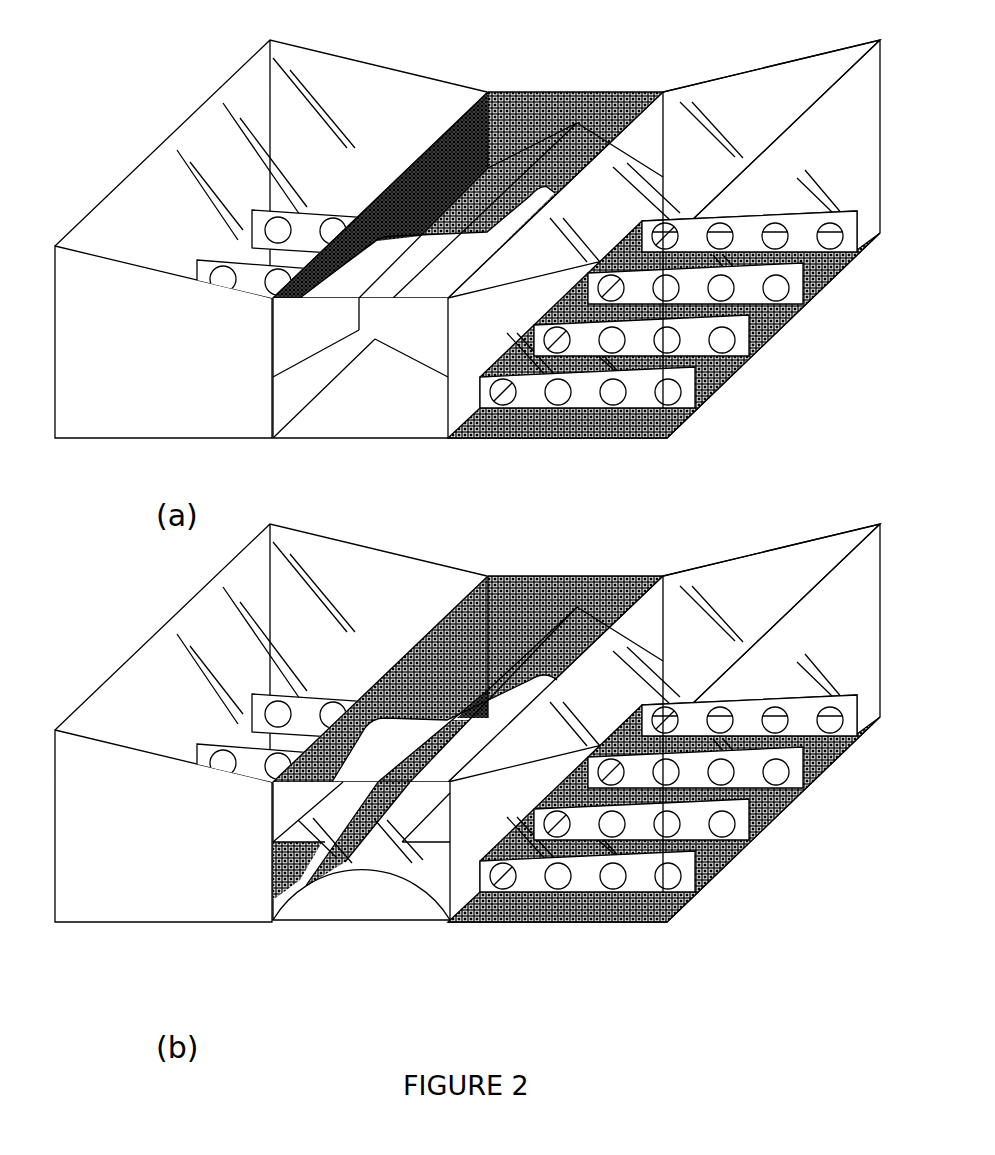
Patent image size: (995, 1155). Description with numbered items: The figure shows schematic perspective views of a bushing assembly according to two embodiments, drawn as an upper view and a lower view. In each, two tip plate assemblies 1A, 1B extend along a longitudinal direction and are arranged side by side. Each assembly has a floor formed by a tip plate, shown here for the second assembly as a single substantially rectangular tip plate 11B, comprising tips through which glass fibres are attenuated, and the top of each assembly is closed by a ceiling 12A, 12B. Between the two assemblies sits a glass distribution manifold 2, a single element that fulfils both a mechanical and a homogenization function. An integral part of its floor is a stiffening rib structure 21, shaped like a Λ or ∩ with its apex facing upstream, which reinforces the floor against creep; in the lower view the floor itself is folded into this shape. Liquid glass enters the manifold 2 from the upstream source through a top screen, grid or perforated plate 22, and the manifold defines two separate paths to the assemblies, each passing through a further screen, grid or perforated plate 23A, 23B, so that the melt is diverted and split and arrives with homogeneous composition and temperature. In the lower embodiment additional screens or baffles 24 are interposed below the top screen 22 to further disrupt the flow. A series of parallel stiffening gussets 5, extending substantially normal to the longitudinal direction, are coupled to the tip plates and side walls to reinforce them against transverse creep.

The first tip plate assembly 1A is at (411, 58).
The second tip plate assembly 1B is at (735, 59).
The ceiling of first tip plate assembly 12A is at (320, 58).
The ceiling of second tip plate assembly 12B is at (770, 62).
The tip plate of second tip plate assembly 11B is at (538, 427).
The glass distribution manifold 2 is at (488, 498).
The stiffening rib structure 21 is at (422, 277).
The top screen 22 is at (533, 108).
The first screen 23A is at (359, 345).
The second screen 23B is at (657, 104).
The additional screens or baffles 24 is at (313, 843).
The stiffening gussets 5 is at (688, 378).